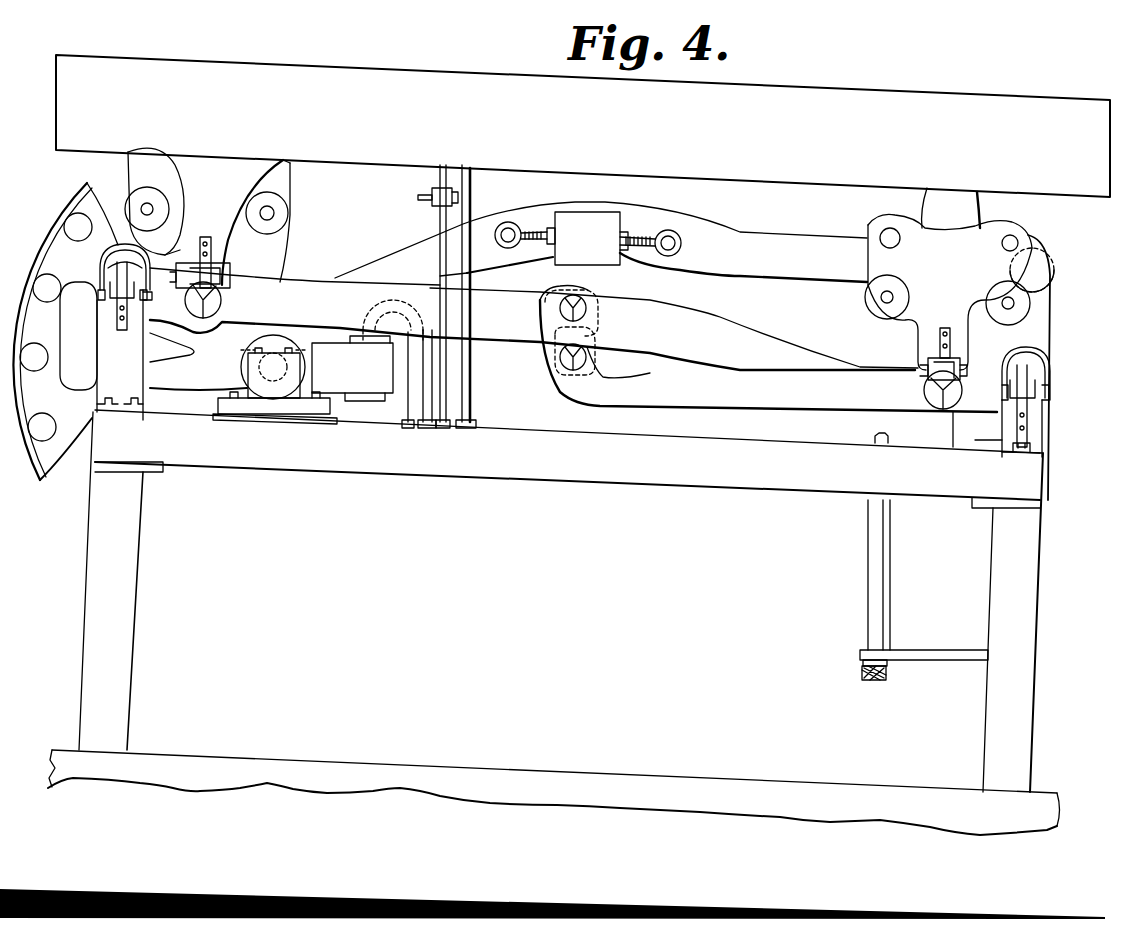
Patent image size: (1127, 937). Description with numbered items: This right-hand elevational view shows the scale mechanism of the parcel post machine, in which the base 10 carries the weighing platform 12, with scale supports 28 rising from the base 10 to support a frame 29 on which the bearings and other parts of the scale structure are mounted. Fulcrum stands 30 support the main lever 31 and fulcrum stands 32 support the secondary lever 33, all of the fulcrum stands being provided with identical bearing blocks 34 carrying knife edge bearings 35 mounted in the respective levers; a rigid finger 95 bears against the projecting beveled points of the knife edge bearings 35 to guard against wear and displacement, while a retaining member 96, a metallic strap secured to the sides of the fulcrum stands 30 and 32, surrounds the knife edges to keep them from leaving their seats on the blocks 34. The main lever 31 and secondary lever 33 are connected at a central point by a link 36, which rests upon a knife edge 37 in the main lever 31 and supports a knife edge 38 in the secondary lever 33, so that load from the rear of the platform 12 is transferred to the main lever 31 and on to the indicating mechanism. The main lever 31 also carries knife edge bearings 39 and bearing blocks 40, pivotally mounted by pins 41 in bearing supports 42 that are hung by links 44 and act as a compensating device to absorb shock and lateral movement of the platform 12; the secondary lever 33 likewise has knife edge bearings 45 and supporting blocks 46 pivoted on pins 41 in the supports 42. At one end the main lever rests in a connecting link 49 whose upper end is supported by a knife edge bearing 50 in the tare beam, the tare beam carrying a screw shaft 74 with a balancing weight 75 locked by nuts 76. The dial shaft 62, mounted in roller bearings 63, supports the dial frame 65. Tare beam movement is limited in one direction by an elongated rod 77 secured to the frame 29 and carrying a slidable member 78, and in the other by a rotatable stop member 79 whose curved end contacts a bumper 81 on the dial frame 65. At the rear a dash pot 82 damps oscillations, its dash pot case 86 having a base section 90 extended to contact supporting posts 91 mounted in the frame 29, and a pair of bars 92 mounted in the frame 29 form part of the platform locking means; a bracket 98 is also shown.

The base 10 is at (740, 785).
The weighing platform 12 is at (64, 113).
The scale supports 28 is at (997, 727).
The frame 29 is at (618, 478).
The fulcrum stands 30 is at (108, 350).
The main lever 31 is at (322, 262).
The fulcrum stands 32 is at (1000, 440).
The secondary lever 33 is at (853, 372).
The bearing blocks 34 is at (110, 310).
The knife edge bearings 35 is at (112, 260).
The link 36 is at (580, 292).
The knife edge 37 is at (584, 316).
The knife edge 38 is at (560, 360).
The knife edge bearings 39 is at (220, 292).
The bearing blocks 40 is at (225, 250).
The pins 41 is at (228, 278).
The bearing supports 42 is at (258, 172).
The links 44 is at (282, 188).
The knife edge bearings 45 is at (940, 412).
The supporting blocks 46 is at (920, 362).
The connecting link 49 is at (1053, 282).
The knife edge bearing 50 is at (1040, 260).
The dial shaft 62 is at (250, 362).
The roller bearings 63 is at (252, 412).
The dial frame 65 is at (70, 460).
The screw shaft 74 is at (668, 231).
The weight 75 is at (636, 200).
The nuts 76 is at (636, 222).
The elongated rod 77 is at (442, 176).
The member 78 is at (428, 204).
The stop member 79 is at (400, 418).
The bumper 81 is at (360, 345).
The dash pot 82 is at (898, 622).
The dash pot case 86 is at (897, 598).
The base section 90 is at (940, 660).
The supporting posts 91 is at (880, 520).
The bars 92 is at (468, 200).
The rigid finger 95 is at (138, 330).
The retaining member 96 is at (1003, 384).
The bracket 98 is at (1032, 445).